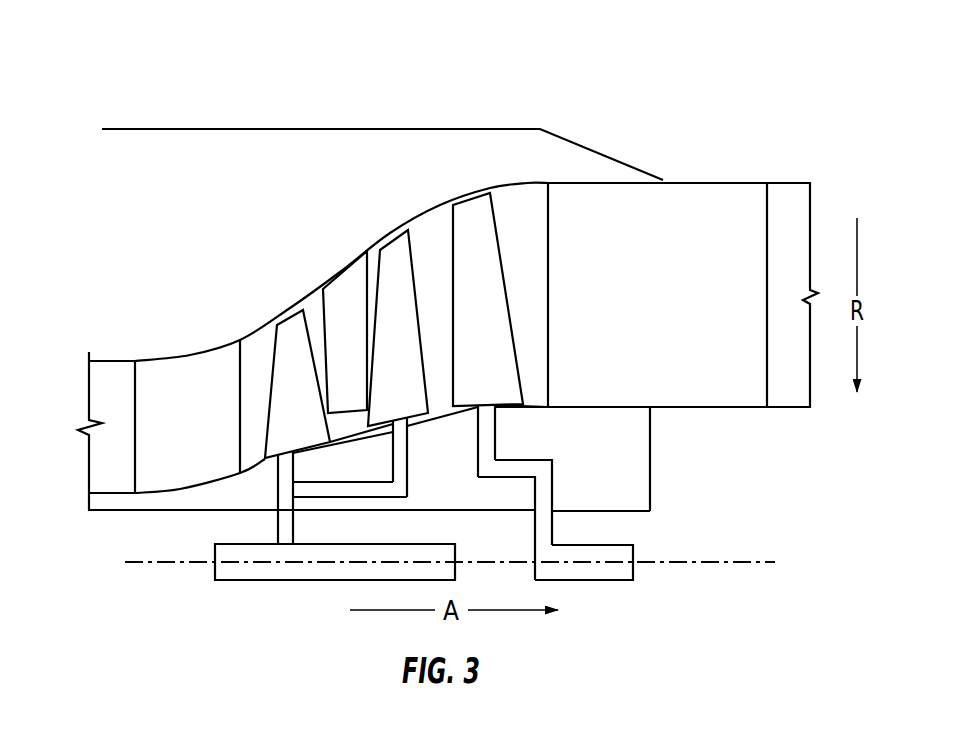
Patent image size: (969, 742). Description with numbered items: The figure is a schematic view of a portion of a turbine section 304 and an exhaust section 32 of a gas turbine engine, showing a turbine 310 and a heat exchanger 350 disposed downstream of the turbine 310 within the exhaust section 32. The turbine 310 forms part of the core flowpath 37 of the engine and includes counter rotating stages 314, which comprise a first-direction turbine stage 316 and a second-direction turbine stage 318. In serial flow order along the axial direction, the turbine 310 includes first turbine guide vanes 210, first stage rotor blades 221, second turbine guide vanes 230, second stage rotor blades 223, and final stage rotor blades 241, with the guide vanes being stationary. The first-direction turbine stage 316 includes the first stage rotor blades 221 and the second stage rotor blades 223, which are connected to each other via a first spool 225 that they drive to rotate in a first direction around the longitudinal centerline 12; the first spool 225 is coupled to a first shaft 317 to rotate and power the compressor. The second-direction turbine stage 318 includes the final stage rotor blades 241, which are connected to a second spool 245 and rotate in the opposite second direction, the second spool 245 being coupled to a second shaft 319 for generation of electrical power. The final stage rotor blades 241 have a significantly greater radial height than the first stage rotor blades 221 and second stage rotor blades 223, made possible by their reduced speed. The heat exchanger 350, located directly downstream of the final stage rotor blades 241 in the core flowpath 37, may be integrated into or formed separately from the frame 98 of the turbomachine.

The turbine section 304 is at (243, 83).
The frame 98 is at (320, 129).
The exhaust section 32 is at (730, 137).
The second-direction turbine stage 318 is at (478, 182).
The counter rotating stages 314 is at (375, 206).
The first-direction turbine stage 316 is at (322, 252).
The turbine 310 is at (268, 288).
The heat exchanger 350 is at (683, 287).
The core flowpath 37 is at (100, 392).
The first turbine guide vanes 210 is at (206, 440).
The first stage rotor blades 221 is at (311, 425).
The second turbine guide vanes 230 is at (361, 320).
The second stage rotor blades 223 is at (415, 390).
The final stage rotor blades 241 is at (501, 358).
The first spool 225 is at (340, 487).
The second spool 245 is at (552, 495).
The first shaft 317 is at (245, 575).
The second shaft 319 is at (597, 571).
The longitudinal centerline 12 is at (700, 560).